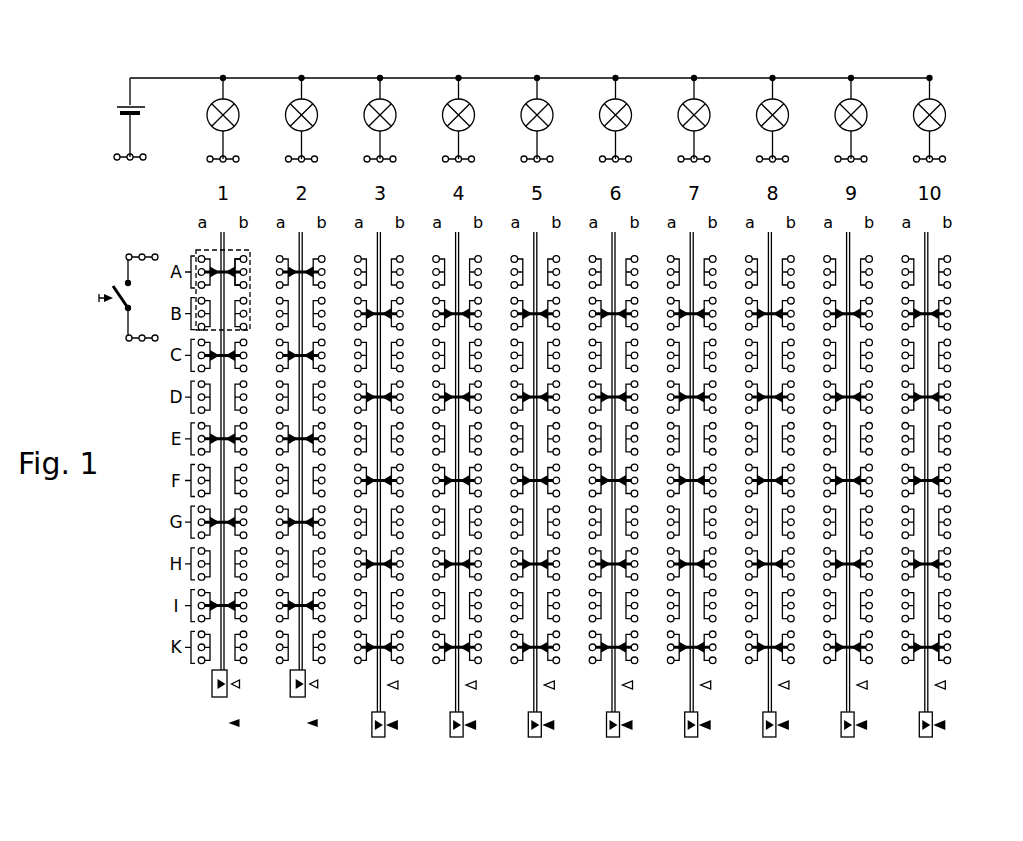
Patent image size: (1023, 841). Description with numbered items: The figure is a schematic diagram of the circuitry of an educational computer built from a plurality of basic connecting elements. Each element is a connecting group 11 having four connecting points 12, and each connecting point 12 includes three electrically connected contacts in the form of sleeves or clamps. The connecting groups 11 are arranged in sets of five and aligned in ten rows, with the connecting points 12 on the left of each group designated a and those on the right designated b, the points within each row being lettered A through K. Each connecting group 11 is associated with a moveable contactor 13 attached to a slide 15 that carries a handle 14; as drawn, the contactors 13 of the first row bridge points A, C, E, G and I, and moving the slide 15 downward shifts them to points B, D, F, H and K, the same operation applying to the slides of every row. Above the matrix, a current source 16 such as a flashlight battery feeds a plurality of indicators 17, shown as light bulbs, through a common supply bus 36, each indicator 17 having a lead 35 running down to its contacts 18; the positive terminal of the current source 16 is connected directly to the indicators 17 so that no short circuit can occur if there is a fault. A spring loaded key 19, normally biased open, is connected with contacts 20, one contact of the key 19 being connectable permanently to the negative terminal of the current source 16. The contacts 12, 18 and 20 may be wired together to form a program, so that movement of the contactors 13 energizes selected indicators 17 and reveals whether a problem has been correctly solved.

The connecting group 11 is at (563, 484).
The connecting point 12 is at (196, 279).
The moveable contactor 13 is at (228, 262).
The handle 14 is at (212, 691).
The slide 15 is at (220, 406).
The current source 16 is at (117, 108).
The indicator 17 is at (207, 114).
The contact 18 is at (146, 165).
The spring loaded key 19 is at (121, 303).
The contact 20 is at (125, 252).
The lamp lead 35 is at (610, 142).
The supply bus 36 is at (491, 77).